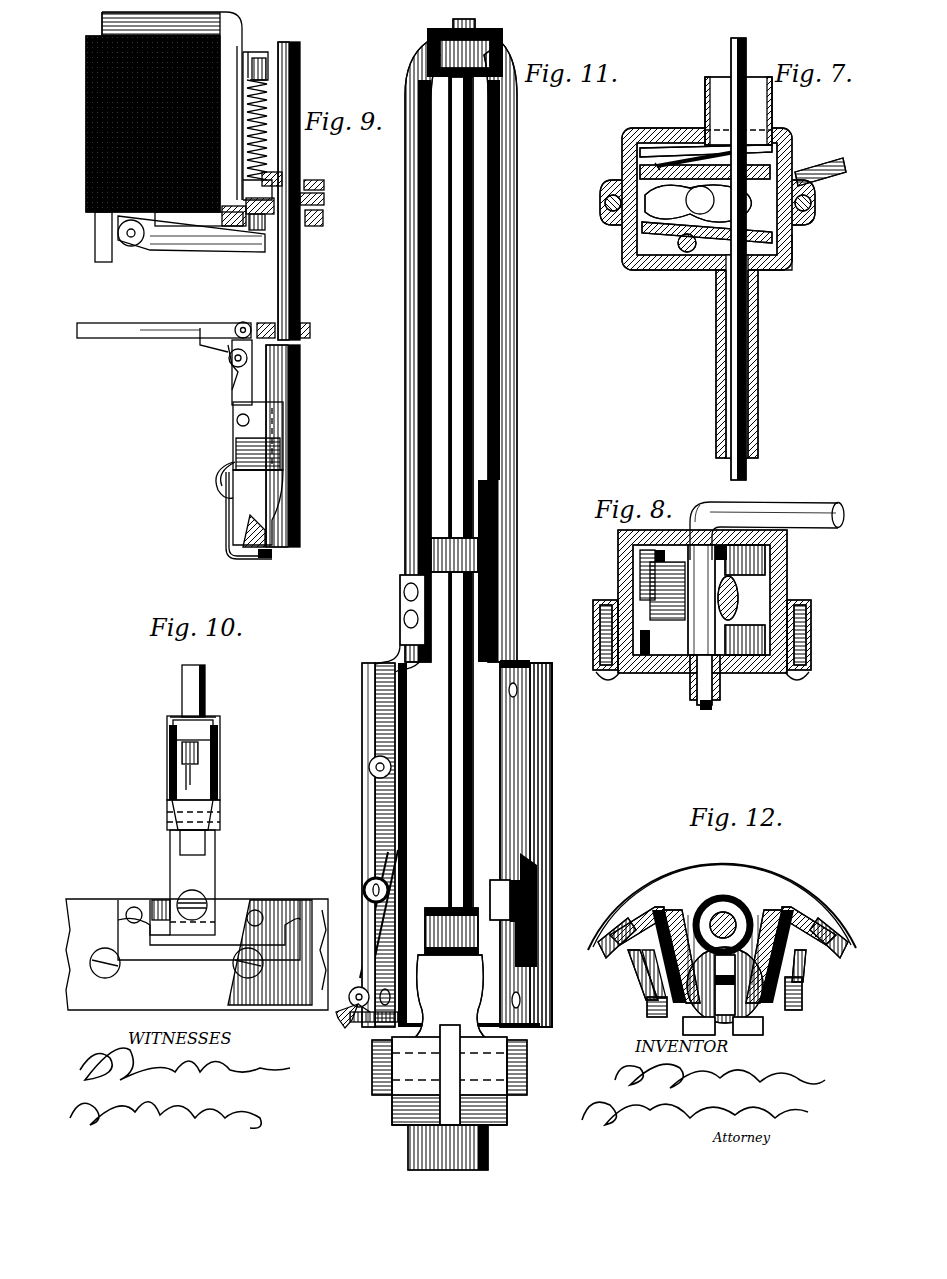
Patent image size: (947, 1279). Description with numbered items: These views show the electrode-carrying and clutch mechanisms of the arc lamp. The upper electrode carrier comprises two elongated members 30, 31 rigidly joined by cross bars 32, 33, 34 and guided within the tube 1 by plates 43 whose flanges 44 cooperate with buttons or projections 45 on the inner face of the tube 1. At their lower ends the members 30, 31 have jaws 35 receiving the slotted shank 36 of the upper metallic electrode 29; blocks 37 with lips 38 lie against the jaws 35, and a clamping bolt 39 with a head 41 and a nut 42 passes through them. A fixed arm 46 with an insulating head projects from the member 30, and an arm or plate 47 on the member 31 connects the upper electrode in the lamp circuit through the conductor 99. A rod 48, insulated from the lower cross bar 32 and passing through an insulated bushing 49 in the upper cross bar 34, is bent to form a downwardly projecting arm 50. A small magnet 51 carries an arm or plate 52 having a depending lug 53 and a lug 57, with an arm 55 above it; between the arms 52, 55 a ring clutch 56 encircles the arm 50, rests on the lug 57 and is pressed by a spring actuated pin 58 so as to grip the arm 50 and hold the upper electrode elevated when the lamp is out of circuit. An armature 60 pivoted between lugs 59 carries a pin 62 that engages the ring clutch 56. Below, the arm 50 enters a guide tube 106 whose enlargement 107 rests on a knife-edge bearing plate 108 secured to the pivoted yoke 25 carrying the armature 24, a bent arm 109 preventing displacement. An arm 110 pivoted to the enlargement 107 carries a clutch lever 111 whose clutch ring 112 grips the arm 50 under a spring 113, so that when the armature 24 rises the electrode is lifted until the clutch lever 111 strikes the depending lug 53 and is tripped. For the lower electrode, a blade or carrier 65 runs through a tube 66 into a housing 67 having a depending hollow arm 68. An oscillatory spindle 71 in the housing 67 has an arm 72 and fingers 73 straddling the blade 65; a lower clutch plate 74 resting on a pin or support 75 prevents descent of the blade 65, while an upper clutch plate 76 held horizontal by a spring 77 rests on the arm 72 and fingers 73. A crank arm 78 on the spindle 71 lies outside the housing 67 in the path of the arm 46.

In FIG. 12, the tube 1 is at (796, 878).
In FIG. 10, the armature 24 is at (197, 954).
In FIG. 10, the yoke 25 is at (318, 906).
In FIG. 11, the upper metallic electrode 29 is at (488, 1146).
In FIG. 12, the upper metallic electrode 29 is at (738, 1030).
In FIG. 11, the elongated member 30 is at (517, 412).
In FIG. 12, the elongated member 30 is at (752, 918).
In FIG. 11, the elongated member 31 is at (405, 412).
In FIG. 12, the elongated member 31 is at (675, 912).
In FIG. 11, the cross bar 32 is at (451, 951).
In FIG. 11, the cross bar 33 is at (431, 550).
In FIG. 11, the cross bar 34 is at (503, 48).
In FIG. 11, the jaws 35 is at (418, 1110).
In FIG. 12, the jaws 35 is at (683, 1028).
In FIG. 11, the slotted shank 36 is at (450, 997).
In FIG. 11, the blocks 37 is at (400, 1066).
In FIG. 11, the lips 38 is at (418, 1118).
In FIG. 11, the clamping bolt 39 is at (378, 1044).
In FIG. 11, the head 41 is at (520, 1078).
In FIG. 12, the head 41 is at (802, 1004).
In FIG. 11, the nut 42 is at (538, 795).
In FIG. 12, the nut 42 is at (647, 1005).
In FIG. 11, the plates 43 is at (377, 664).
In FIG. 12, the plates 43 is at (803, 962).
In FIG. 11, the flanges 44 is at (368, 744).
In FIG. 12, the flanges 44 is at (640, 907).
In FIG. 12, the buttons or projections 45 is at (721, 956).
In FIG. 11, the fixed arm 46 is at (537, 890).
In FIG. 11, the arm or plate 47 is at (377, 704).
In FIG. 11, the rod 48 is at (474, 314).
In FIG. 11, the insulated bushing 49 is at (428, 38).
In FIG. 9, the downwardly projecting arm 50 is at (299, 284).
In FIG. 10, the downwardly projecting arm 50 is at (182, 690).
In FIG. 9, the small magnet 51 is at (98, 208).
In FIG. 9, the arm or plate 52 is at (228, 226).
In FIG. 9, the depending lug 53 is at (102, 262).
In FIG. 9, the arm 55 is at (324, 182).
In FIG. 9, the ring clutch 56 is at (324, 198).
In FIG. 9, the lug 57 is at (323, 216).
In FIG. 9, the spring actuated pin 58 is at (272, 186).
In FIG. 9, the lugs 59 is at (134, 246).
In FIG. 9, the armature 60 is at (188, 244).
In FIG. 9, the pin 62 is at (265, 220).
In FIG. 7, the blade or carrier 65 is at (746, 348).
In FIG. 8, the blade or carrier 65 is at (740, 588).
In FIG. 7, the tube 66 is at (772, 112).
In FIG. 7, the housing 67 is at (650, 270).
In FIG. 8, the housing 67 is at (618, 548).
In FIG. 7, the depending hollow arm 68 is at (716, 384).
In FIG. 7, the oscillatory spindle 71 is at (668, 218).
In FIG. 8, the oscillatory spindle 71 is at (695, 682).
In FIG. 7, the arm 72 is at (622, 182).
In FIG. 8, the arm 72 is at (640, 588).
In FIG. 7, the fingers 73 is at (797, 222).
In FIG. 8, the fingers 73 is at (765, 558).
In FIG. 7, the clutch plate 74 is at (780, 268).
In FIG. 8, the clutch plate 74 is at (808, 640).
In FIG. 7, the pin or support 75 is at (686, 254).
In FIG. 7, the clutch plate 76 is at (640, 156).
In FIG. 7, the spring 77 is at (690, 160).
In FIG. 7, the crank arm 78 is at (815, 166).
In FIG. 8, the crank arm 78 is at (767, 518).
In FIG. 11, the conductor 99 is at (340, 1016).
In FIG. 9, the guide tube 106 is at (300, 382).
In FIG. 9, the enlargement 107 is at (240, 510).
In FIG. 10, the enlargement 107 is at (218, 856).
In FIG. 9, the knife-edge bearing plate 108 is at (230, 558).
In FIG. 10, the knife-edge bearing plate 108 is at (158, 896).
In FIG. 9, the bent arm 109 is at (263, 560).
In FIG. 10, the bent arm 109 is at (208, 888).
In FIG. 9, the arm 110 is at (240, 396).
In FIG. 10, the arm 110 is at (178, 788).
In FIG. 9, the clutch lever 111 is at (170, 328).
In FIG. 10, the clutch lever 111 is at (207, 712).
In FIG. 9, the clutch ring 112 is at (310, 330).
In FIG. 9, the spring 113 is at (205, 349).
In FIG. 10, the spring 113 is at (214, 742).